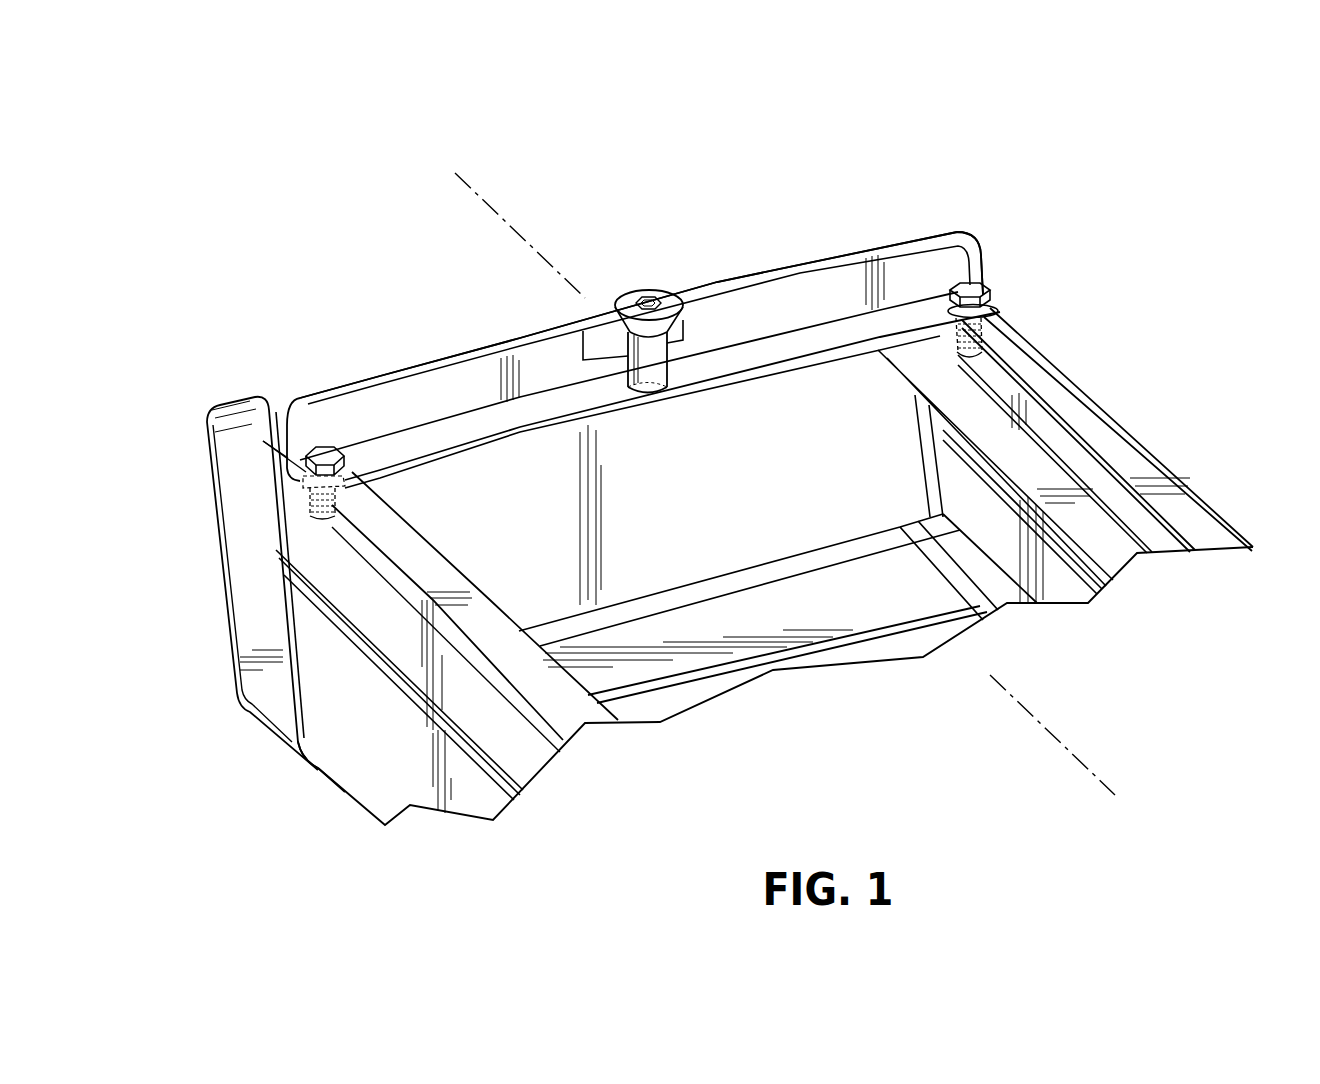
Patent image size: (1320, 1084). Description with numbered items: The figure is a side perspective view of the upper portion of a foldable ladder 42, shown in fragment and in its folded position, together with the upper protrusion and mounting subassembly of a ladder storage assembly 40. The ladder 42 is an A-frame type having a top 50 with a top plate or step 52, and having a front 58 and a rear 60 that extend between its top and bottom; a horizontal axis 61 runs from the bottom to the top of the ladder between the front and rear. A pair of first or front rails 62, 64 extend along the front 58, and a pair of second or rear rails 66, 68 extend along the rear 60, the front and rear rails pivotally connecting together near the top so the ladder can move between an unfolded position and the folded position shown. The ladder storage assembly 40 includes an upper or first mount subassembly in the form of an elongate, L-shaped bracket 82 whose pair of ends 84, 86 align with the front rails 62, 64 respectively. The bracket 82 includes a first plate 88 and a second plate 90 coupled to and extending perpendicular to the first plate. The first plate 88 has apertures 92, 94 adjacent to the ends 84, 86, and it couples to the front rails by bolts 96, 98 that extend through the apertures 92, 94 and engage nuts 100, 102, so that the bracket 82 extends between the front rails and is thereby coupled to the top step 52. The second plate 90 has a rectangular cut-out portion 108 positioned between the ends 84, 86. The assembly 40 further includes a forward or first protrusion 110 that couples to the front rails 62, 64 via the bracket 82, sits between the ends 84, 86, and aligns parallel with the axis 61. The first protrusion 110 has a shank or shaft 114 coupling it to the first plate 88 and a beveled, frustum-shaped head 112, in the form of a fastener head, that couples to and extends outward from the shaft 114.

The ladder storage assembly 40 is at (1006, 148).
The ladder 42 is at (1126, 366).
The top 50 is at (1008, 241).
The top plate or step 52 is at (223, 507).
The front 58 is at (479, 610).
The rear 60 is at (370, 830).
The horizontal axis 61 is at (465, 181).
The front rail 62 is at (303, 561).
The front rail 64 is at (1172, 488).
The rear rail 66 is at (346, 763).
The rear rail 68 is at (1063, 588).
The bracket 82 is at (300, 392).
The end 84 is at (263, 440).
The end 86 is at (983, 274).
The first plate 88 is at (514, 435).
The second plate 90 is at (454, 406).
The aperture 92 is at (310, 482).
The aperture 94 is at (998, 311).
The bolt 96 is at (315, 460).
The bolt 98 is at (977, 292).
The nut 100 is at (345, 497).
The nut 102 is at (957, 329).
The cut-out portion 108 is at (593, 347).
The first protrusion 110 is at (671, 275).
The head 112 is at (633, 292).
The shank or shaft 114 is at (660, 378).